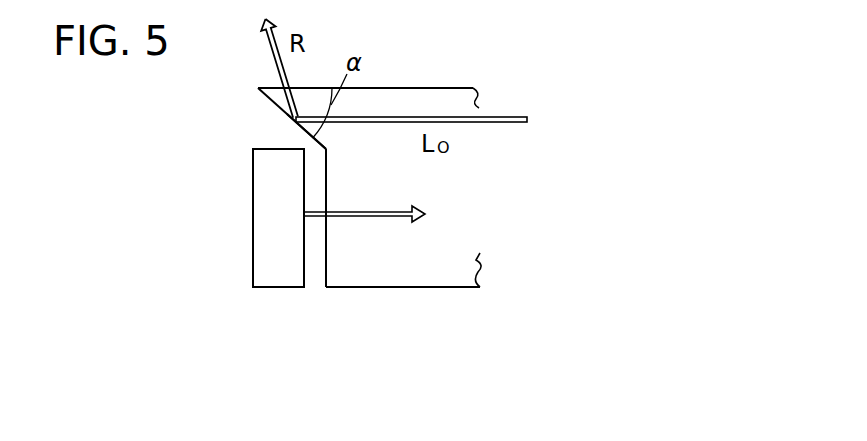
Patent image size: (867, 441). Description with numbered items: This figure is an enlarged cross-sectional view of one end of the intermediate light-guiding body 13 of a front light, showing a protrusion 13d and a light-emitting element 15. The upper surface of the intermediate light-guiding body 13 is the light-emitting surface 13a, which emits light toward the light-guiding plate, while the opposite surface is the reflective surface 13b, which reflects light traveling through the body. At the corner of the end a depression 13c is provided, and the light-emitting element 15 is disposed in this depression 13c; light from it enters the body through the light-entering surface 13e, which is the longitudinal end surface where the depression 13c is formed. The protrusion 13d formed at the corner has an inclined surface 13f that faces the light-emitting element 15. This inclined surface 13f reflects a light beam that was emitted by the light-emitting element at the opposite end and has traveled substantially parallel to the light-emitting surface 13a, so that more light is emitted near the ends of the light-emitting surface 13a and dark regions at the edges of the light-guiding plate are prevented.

The intermediate light-guiding body 13 is at (438, 272).
The light-emitting surface 13a is at (398, 88).
The reflective surface 13b is at (353, 288).
The depression 13c is at (316, 268).
The protrusion 13d is at (278, 99).
The light-entering surface 13e is at (326, 247).
The inclined surface 13f is at (287, 114).
The light-emitting element 15 is at (265, 218).